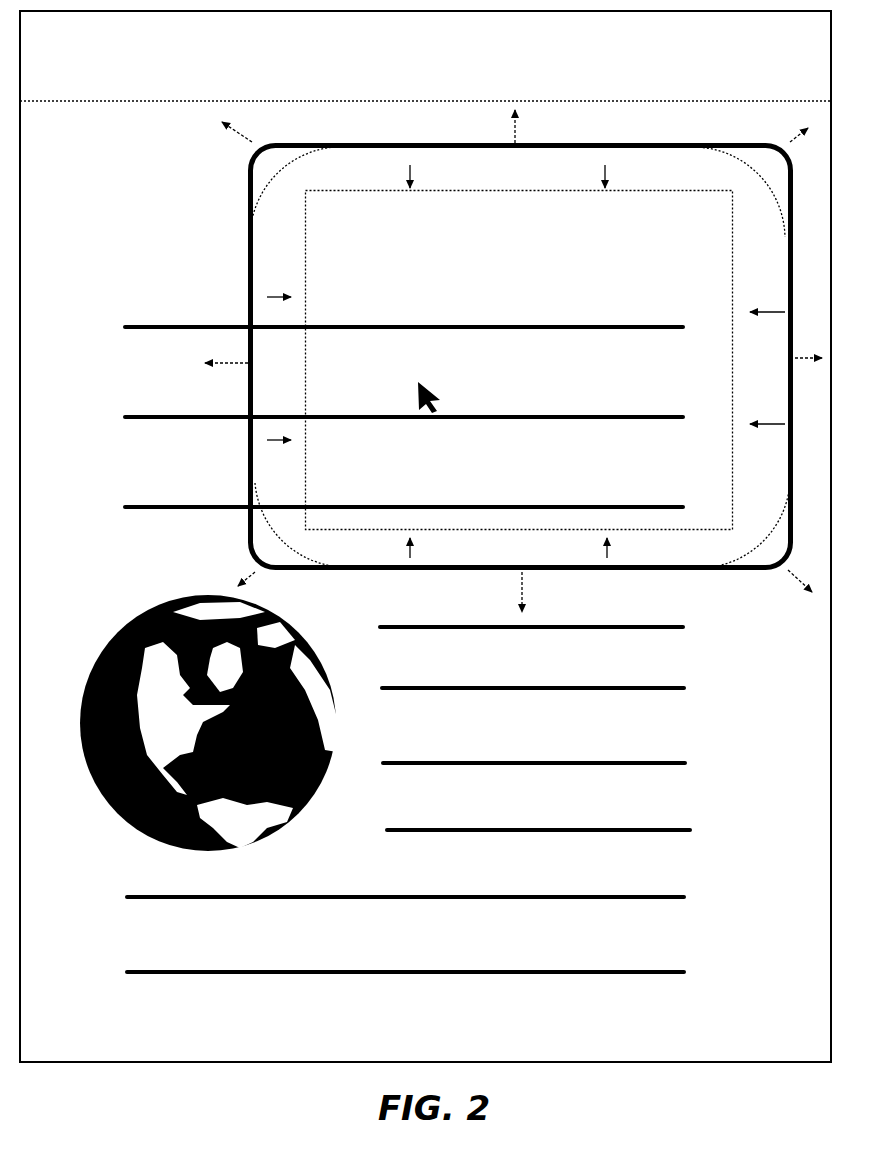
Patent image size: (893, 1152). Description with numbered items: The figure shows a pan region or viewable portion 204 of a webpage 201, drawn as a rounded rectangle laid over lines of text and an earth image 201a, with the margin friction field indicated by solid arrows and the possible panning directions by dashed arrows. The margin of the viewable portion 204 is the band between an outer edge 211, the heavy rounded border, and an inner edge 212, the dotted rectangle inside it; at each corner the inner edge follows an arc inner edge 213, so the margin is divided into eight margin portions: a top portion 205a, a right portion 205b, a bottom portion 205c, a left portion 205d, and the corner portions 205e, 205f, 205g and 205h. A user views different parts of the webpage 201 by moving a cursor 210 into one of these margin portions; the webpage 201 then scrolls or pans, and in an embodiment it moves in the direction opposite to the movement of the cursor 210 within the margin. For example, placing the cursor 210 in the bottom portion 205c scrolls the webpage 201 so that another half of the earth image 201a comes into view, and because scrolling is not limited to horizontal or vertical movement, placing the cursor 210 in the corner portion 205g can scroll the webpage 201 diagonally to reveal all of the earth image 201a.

The webpage 201 is at (77, 80).
The earth image 201a is at (116, 845).
The viewable portion 204 is at (503, 304).
The margin portion 205a is at (507, 149).
The margin portion 205b is at (779, 368).
The margin portion 205c is at (508, 575).
The margin portion 205d is at (252, 368).
The margin portion 205e is at (732, 212).
The margin portion 205f is at (725, 512).
The margin portion 205g is at (318, 510).
The margin portion 205h is at (313, 212).
The cursor 210 is at (418, 386).
The outer edge 211 is at (247, 290).
The inner edge 212 is at (358, 196).
The arc inner edge 213 is at (718, 212).